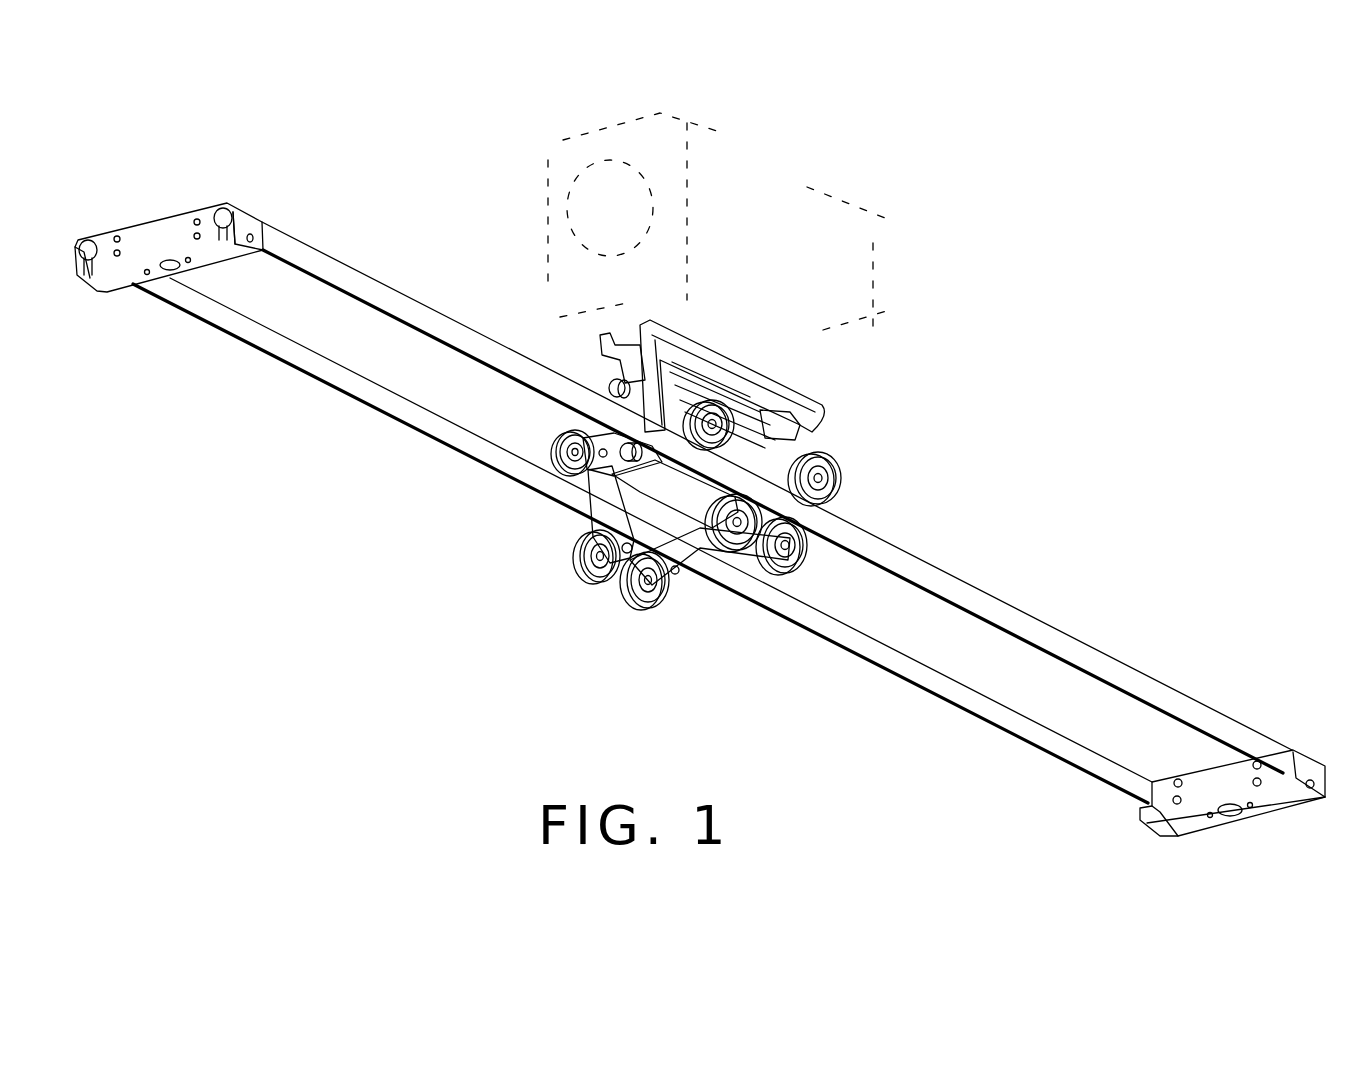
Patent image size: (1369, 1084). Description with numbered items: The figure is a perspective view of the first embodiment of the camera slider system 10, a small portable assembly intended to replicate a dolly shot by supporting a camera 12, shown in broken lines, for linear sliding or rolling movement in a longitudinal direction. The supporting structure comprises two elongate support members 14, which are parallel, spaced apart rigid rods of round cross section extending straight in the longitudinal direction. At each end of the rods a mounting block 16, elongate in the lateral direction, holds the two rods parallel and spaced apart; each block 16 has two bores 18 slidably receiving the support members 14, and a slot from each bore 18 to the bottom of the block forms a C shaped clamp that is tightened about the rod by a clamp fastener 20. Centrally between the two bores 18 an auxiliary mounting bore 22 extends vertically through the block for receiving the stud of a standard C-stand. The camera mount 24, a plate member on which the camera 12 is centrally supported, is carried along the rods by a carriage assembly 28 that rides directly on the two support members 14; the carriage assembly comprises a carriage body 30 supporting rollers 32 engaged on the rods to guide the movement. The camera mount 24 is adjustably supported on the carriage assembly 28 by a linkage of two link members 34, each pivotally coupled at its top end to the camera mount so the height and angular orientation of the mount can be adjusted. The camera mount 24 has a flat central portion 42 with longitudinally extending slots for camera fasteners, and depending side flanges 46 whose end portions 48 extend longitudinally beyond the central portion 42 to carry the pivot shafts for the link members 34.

The camera slider system 10 is at (410, 667).
The camera 12 is at (763, 162).
The elongate support members 14 is at (1050, 640).
The mounting block 16 is at (162, 210).
The bores 18 is at (96, 238).
The clamp fastener 20 is at (252, 255).
The auxiliary mounting bore 22 is at (168, 278).
The camera mount 24 is at (760, 357).
The carriage assembly 28 is at (781, 424).
The carriage body 30 is at (577, 535).
The rollers 32 is at (800, 525).
The link members 34 is at (598, 342).
The central portion 42 is at (725, 397).
The side flanges 46 is at (723, 333).
The end portions 48 is at (795, 412).